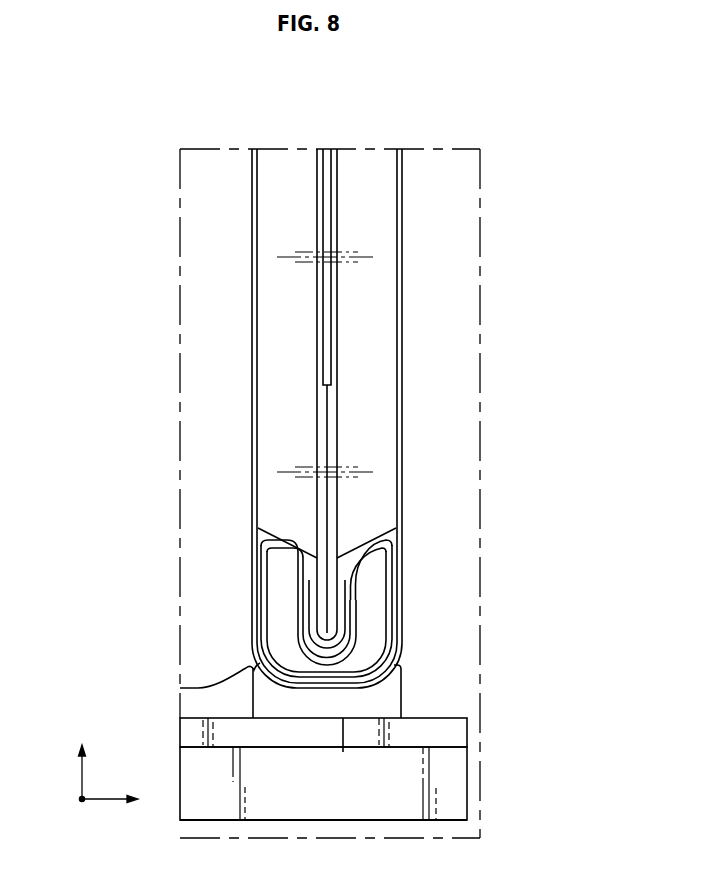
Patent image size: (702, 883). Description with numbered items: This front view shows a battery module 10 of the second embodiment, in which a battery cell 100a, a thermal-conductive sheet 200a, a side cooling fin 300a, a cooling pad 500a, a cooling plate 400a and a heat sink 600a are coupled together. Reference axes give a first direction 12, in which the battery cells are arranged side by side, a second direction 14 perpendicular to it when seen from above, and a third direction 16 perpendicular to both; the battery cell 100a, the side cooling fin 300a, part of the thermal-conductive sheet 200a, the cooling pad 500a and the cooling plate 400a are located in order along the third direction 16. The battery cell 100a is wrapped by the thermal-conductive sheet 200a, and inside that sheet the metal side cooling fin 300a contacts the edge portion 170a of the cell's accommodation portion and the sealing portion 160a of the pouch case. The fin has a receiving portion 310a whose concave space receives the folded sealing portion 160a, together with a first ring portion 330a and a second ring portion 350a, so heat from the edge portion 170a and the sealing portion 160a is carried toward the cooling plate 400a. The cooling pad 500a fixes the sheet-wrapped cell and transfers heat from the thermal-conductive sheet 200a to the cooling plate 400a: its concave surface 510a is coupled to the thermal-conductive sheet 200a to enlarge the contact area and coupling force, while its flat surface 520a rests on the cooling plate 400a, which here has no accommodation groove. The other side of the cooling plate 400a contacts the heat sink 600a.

The battery module 10 is at (124, 94).
The first direction 12 is at (123, 799).
The second direction 14 is at (82, 801).
The third direction 16 is at (82, 758).
The battery cell 100a is at (372, 380).
The sealing portion 160a is at (306, 580).
The edge portion 170a is at (260, 528).
The thermal-conductive sheet 200a is at (402, 500).
The side cooling fin 300a is at (397, 603).
The receiving portion 310a is at (313, 668).
The first ring portion 330a is at (263, 557).
The second ring portion 350a is at (392, 557).
The cooling plate 400a is at (470, 732).
The cooling pad 500a is at (407, 686).
The surface of the cooling pad 510a is at (198, 688).
The surface of the cooling pad 520a is at (343, 752).
The heat sink 600a is at (470, 785).